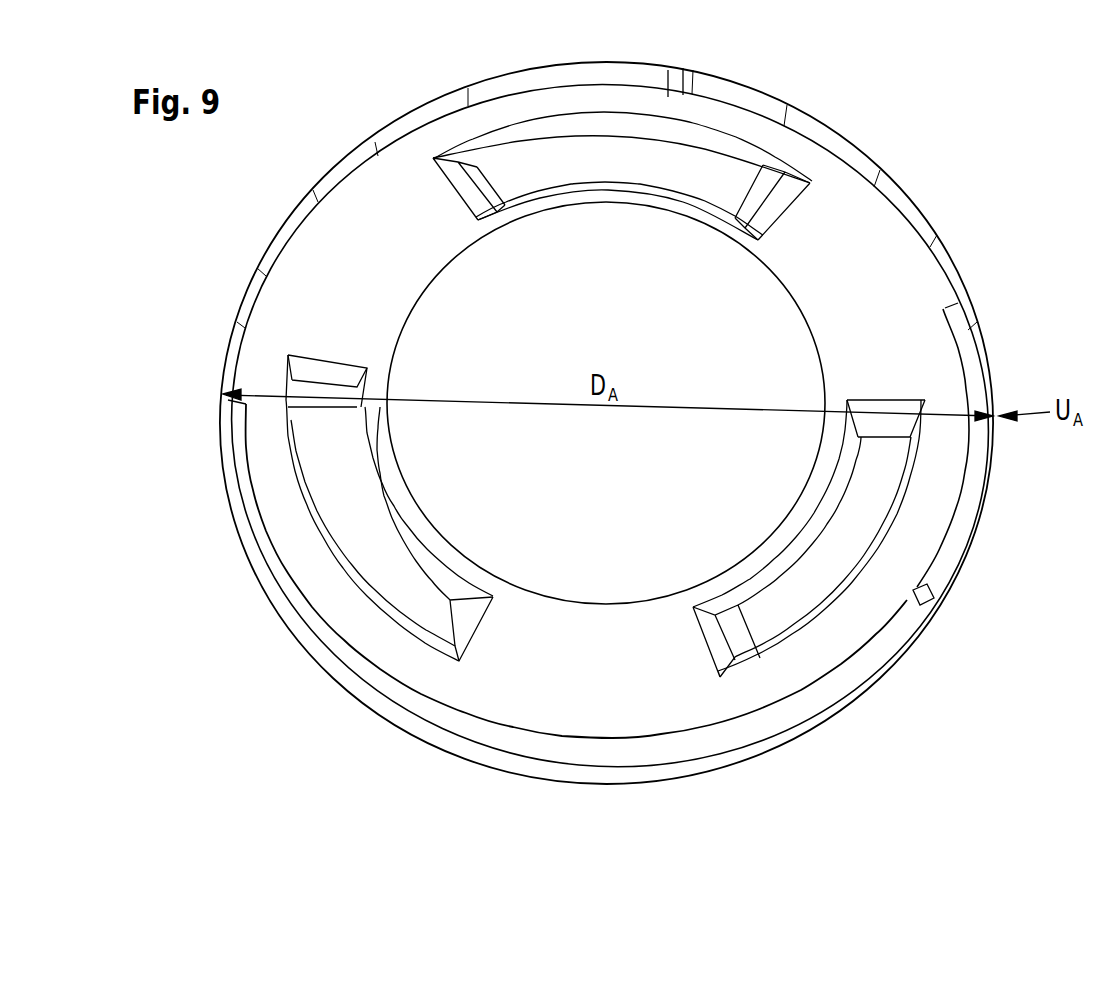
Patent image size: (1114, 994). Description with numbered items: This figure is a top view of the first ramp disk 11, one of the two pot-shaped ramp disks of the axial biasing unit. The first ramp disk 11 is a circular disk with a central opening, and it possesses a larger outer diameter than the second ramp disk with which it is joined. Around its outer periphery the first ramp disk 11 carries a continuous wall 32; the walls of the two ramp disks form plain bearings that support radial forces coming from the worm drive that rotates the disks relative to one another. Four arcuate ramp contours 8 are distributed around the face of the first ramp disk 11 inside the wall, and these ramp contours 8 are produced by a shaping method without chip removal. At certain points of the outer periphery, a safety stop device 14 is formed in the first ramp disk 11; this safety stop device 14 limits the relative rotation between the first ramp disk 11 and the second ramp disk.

The ramp contours 8 is at (562, 163).
The first ramp disk 11 is at (528, 783).
The safety stop device 14 is at (678, 98).
The continuous wall 32 is at (650, 755).